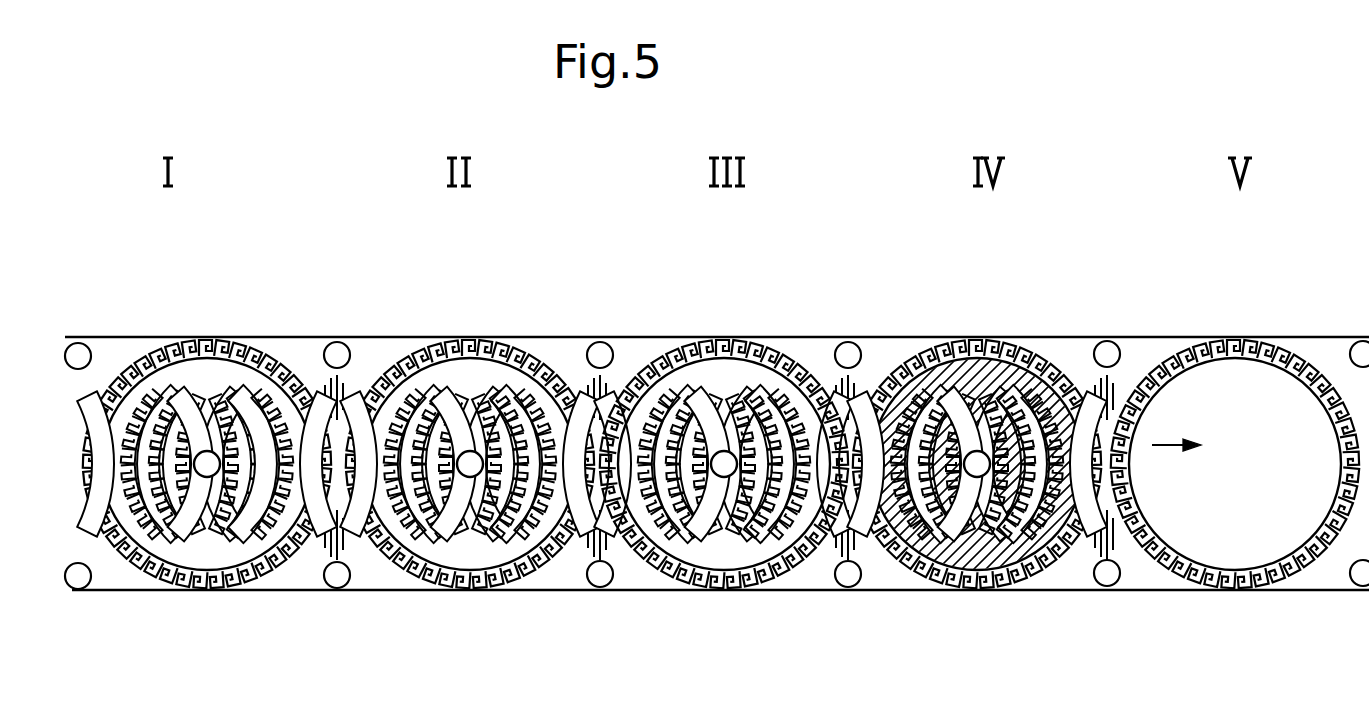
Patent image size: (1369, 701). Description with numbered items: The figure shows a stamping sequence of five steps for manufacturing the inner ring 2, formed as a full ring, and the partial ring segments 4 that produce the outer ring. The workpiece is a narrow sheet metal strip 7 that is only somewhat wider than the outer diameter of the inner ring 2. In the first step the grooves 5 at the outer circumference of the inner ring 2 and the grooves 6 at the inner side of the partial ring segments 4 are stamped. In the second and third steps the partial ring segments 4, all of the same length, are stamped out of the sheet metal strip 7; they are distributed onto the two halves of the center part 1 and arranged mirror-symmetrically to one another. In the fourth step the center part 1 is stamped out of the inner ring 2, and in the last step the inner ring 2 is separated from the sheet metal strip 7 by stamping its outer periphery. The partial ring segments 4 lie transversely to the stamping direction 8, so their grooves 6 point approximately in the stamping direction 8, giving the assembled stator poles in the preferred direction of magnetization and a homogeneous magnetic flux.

The center part 1 is at (1012, 555).
The inner ring 2 is at (1272, 338).
The partial ring segments 4 is at (793, 533).
The grooves 5 is at (168, 580).
The grooves 6 is at (247, 398).
The sheet metal strip 7 is at (267, 398).
The stamping direction 8 is at (1175, 429).